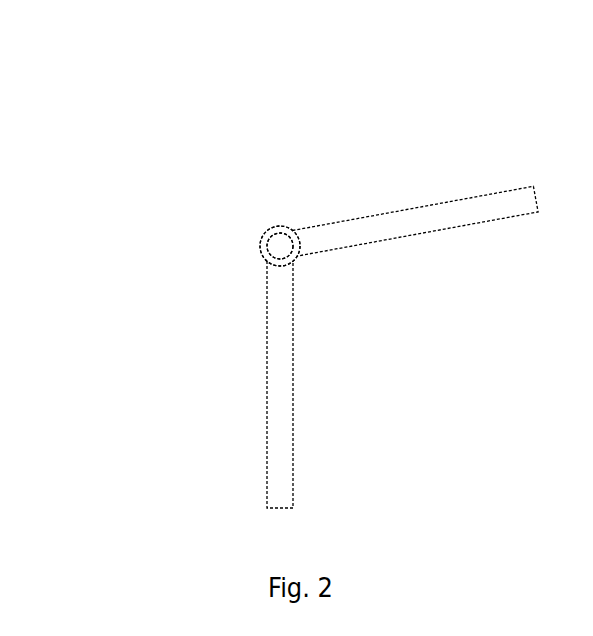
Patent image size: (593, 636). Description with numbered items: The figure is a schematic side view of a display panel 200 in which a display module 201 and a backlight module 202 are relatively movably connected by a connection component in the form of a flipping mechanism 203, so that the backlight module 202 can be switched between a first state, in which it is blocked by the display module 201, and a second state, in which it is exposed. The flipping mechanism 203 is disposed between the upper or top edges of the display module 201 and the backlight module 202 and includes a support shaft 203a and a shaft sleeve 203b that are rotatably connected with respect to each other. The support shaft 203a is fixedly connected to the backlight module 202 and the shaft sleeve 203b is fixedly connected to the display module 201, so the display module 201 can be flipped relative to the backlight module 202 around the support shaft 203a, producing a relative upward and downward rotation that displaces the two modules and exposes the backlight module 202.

The display panel 200 is at (186, 106).
The display module 201 is at (427, 205).
The backlight module 202 is at (293, 380).
The flipping mechanism 203 is at (110, 190).
The support shaft 203a is at (273, 248).
The shaft sleeve 203b is at (272, 230).